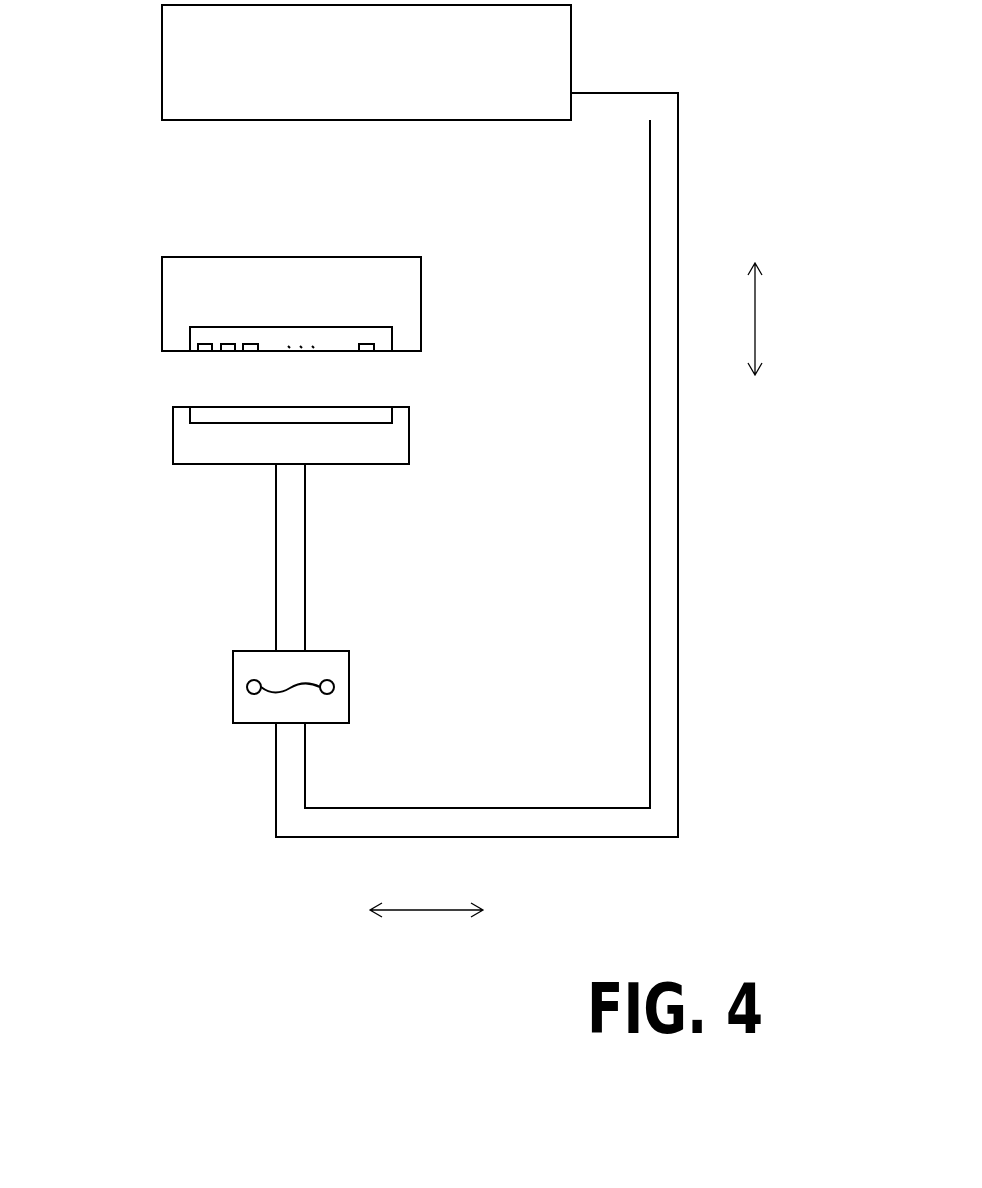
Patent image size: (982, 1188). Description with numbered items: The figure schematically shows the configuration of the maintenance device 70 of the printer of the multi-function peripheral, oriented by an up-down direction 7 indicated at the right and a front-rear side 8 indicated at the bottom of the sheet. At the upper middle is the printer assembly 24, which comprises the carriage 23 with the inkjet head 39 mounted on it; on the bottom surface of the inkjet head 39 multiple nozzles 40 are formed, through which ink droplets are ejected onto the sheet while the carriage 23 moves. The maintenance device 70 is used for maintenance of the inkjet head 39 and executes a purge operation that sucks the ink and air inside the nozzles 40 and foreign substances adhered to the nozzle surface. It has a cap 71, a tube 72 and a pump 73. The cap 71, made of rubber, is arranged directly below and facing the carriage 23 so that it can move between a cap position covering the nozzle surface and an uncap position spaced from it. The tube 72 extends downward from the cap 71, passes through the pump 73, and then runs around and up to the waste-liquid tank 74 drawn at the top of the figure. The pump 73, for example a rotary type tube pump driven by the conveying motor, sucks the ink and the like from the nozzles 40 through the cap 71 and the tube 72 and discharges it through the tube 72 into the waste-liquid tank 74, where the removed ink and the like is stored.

The up-down direction 7 is at (757, 318).
The front-rear side 8 is at (425, 913).
The carriage 23 is at (421, 280).
The printer assembly 24 is at (245, 332).
The inkjet head 39 is at (392, 340).
The nozzles 40 is at (367, 352).
The maintenance device 70 is at (389, 465).
The cap 71 is at (173, 432).
The tube 72 is at (276, 553).
The pump 73 is at (233, 683).
The waste-liquid tank 74 is at (162, 62).